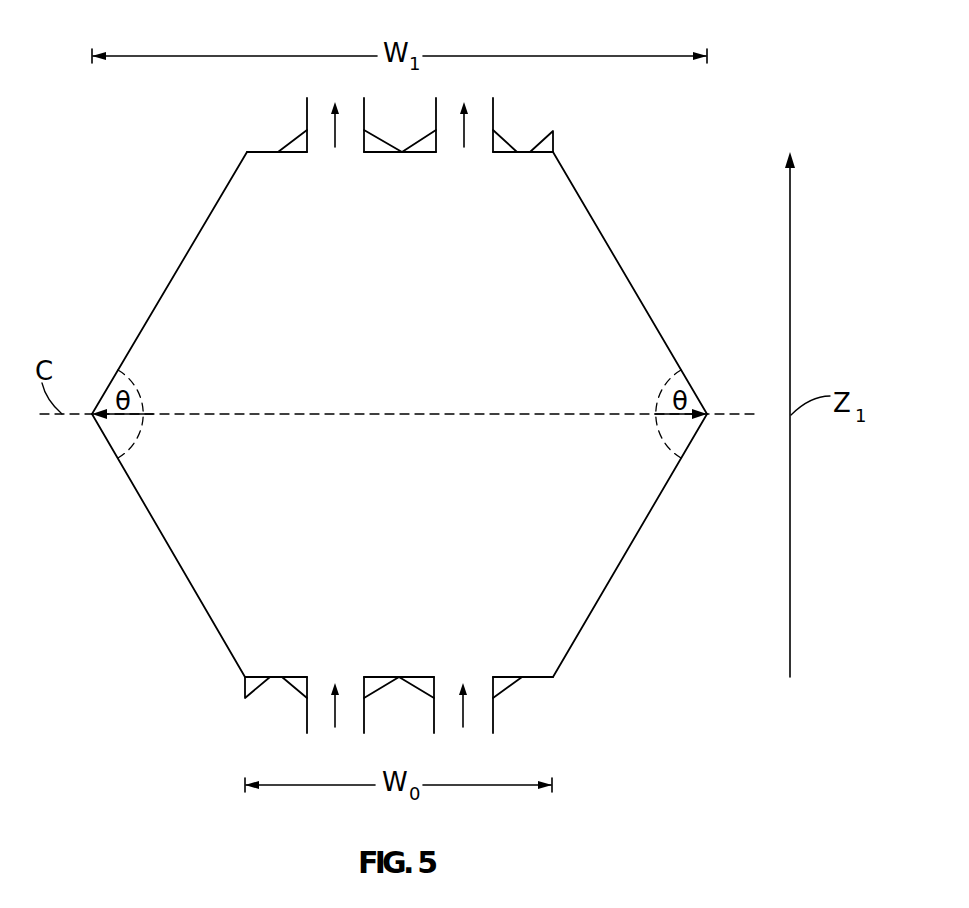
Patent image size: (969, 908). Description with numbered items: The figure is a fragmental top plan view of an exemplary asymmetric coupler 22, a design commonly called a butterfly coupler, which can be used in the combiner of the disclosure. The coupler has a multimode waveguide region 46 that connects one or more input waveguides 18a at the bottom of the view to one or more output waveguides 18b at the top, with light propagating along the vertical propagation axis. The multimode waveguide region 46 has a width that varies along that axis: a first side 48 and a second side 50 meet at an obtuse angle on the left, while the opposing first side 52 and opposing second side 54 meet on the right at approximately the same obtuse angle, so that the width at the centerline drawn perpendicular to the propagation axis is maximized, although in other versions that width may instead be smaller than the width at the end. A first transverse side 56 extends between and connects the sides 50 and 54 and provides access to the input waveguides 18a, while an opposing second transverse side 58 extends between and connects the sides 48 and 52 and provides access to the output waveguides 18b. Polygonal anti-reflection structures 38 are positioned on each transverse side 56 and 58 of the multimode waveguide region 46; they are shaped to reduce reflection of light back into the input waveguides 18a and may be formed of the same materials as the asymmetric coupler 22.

The asymmetric coupler 22 is at (755, 95).
The input waveguides 18a is at (307, 713).
The output waveguides 18b is at (307, 112).
The anti-reflection structures 38 is at (297, 141).
The multimode waveguide region 46 is at (691, 364).
The first side 48 is at (168, 282).
The second side 50 is at (172, 553).
The opposing first side 52 is at (628, 278).
The opposing second side 54 is at (632, 543).
The first transverse side 56 is at (277, 676).
The second transverse side 58 is at (400, 153).